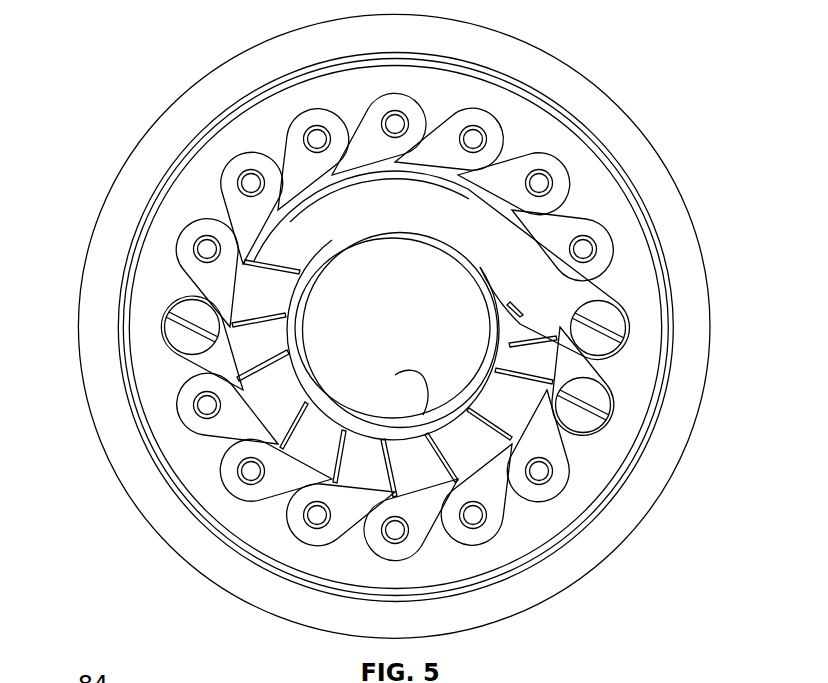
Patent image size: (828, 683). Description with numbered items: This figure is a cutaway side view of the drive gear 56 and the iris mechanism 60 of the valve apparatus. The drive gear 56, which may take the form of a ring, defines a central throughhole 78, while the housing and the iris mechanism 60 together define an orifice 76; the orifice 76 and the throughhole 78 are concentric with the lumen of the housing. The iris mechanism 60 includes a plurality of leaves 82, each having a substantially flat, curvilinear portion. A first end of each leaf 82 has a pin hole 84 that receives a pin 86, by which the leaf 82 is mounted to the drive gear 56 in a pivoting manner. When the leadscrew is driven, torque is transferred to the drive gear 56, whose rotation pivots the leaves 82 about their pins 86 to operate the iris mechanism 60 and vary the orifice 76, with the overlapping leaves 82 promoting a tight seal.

The drive gear 56 is at (143, 521).
The iris mechanism 60 is at (560, 154).
The orifice 76 is at (407, 235).
The throughhole 78 is at (395, 375).
The leaf 82 is at (613, 297).
The pin hole 84 is at (473, 535).
The pin 86 is at (473, 500).